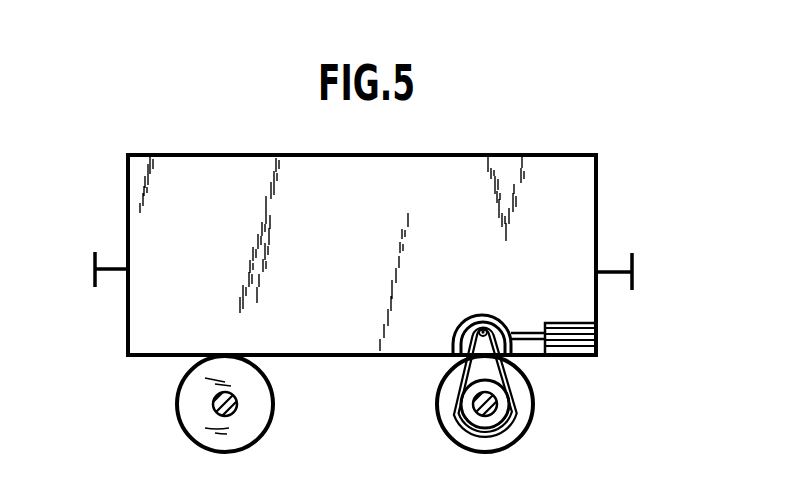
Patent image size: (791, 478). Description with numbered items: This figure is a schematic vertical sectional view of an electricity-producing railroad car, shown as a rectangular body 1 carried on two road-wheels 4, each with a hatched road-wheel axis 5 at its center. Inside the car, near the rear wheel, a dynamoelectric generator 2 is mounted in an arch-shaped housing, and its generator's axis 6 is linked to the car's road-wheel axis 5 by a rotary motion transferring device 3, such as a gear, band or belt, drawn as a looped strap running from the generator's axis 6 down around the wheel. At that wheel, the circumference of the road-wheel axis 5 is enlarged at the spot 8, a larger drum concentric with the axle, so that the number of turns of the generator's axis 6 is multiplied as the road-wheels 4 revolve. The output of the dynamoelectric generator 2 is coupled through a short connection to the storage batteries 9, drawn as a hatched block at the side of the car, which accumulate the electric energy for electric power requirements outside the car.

The car body 1 is at (369, 154).
The dynamoelectric generator 2 is at (496, 316).
The rotary motion transferring device 3 is at (512, 364).
The road-wheels 4 is at (177, 404).
The road-wheel axis 5 is at (237, 401).
The generator's axis 6 is at (477, 316).
The enlarged spot of the road-wheel axis 8 is at (497, 417).
The storage batteries 9 is at (592, 335).